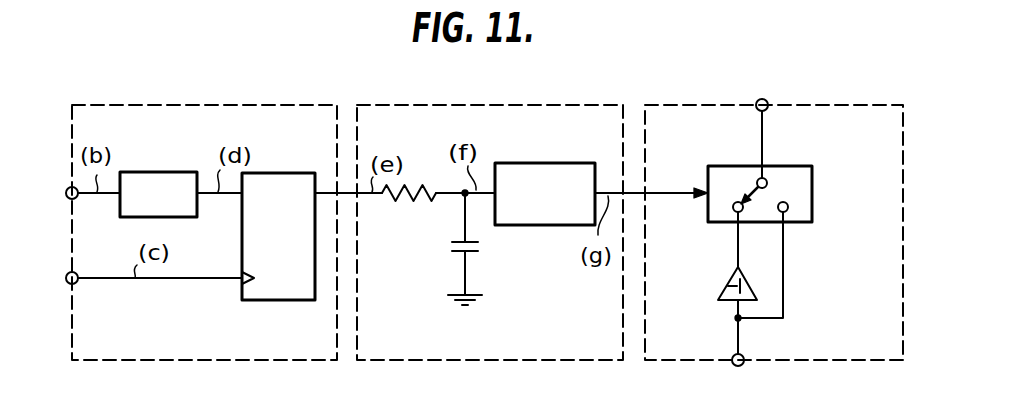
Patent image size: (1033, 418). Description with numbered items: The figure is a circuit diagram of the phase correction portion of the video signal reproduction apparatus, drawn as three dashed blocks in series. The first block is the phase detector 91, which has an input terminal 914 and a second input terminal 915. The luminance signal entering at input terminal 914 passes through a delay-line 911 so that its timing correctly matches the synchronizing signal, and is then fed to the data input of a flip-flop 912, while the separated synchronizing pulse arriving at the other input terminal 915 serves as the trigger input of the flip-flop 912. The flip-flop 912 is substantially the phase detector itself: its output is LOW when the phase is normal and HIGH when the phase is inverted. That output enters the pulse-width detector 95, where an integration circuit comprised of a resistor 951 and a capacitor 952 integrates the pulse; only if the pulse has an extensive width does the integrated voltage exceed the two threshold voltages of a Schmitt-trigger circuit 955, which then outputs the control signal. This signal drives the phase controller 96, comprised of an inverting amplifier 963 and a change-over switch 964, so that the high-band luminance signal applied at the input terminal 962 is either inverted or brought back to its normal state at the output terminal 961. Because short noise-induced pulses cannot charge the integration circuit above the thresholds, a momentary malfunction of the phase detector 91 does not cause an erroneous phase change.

The phase detector 91 is at (102, 104).
The delay-line 911 is at (150, 172).
The flip-flop 912 is at (278, 173).
The input terminal 914 is at (66, 188).
The input terminal 915 is at (68, 284).
The pulse-width detector 95 is at (550, 104).
The resistor 951 is at (424, 188).
The capacitor 952 is at (480, 245).
The Schmitt-trigger circuit 955 is at (555, 163).
The phase controller 96 is at (686, 105).
The output terminal 961 is at (768, 99).
The input terminal 962 is at (743, 366).
The inverting amplifier 963 is at (722, 290).
The change-over switch 964 is at (793, 166).